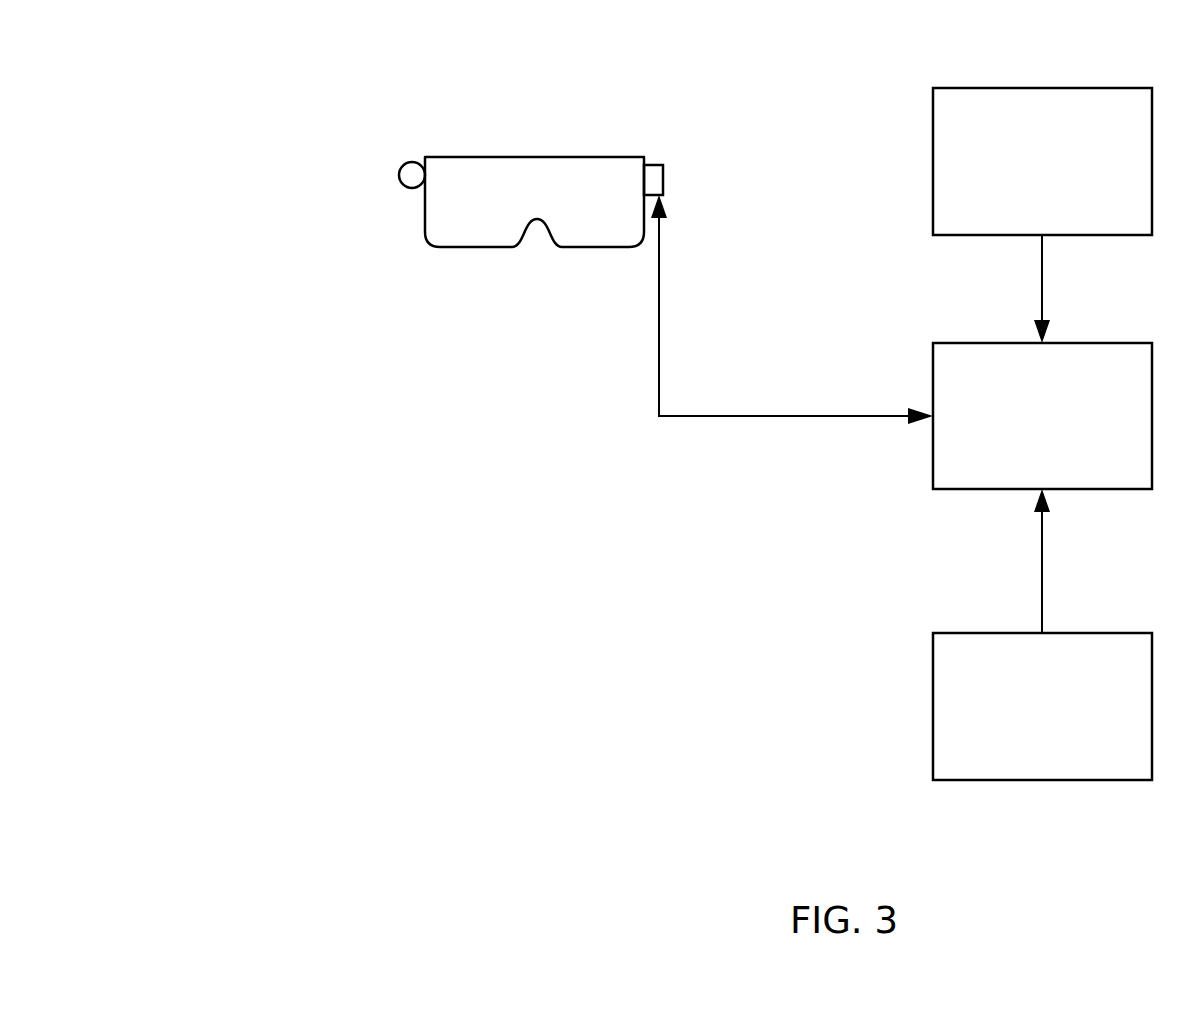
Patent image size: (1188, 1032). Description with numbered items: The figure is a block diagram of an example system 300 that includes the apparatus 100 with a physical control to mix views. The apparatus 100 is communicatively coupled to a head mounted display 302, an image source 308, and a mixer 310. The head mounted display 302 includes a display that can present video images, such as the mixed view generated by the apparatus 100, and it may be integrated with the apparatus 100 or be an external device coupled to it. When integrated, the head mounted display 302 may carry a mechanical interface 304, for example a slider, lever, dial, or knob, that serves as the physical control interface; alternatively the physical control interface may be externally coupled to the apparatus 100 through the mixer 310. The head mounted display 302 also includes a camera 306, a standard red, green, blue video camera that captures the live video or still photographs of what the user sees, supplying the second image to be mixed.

The system 300 is at (207, 44).
The head mounted display 302 is at (577, 157).
The mechanical interface 304 is at (663, 177).
The camera 306 is at (401, 187).
The image source 308 is at (1023, 186).
The apparatus 100 is at (1023, 426).
The mixer 310 is at (1023, 731).